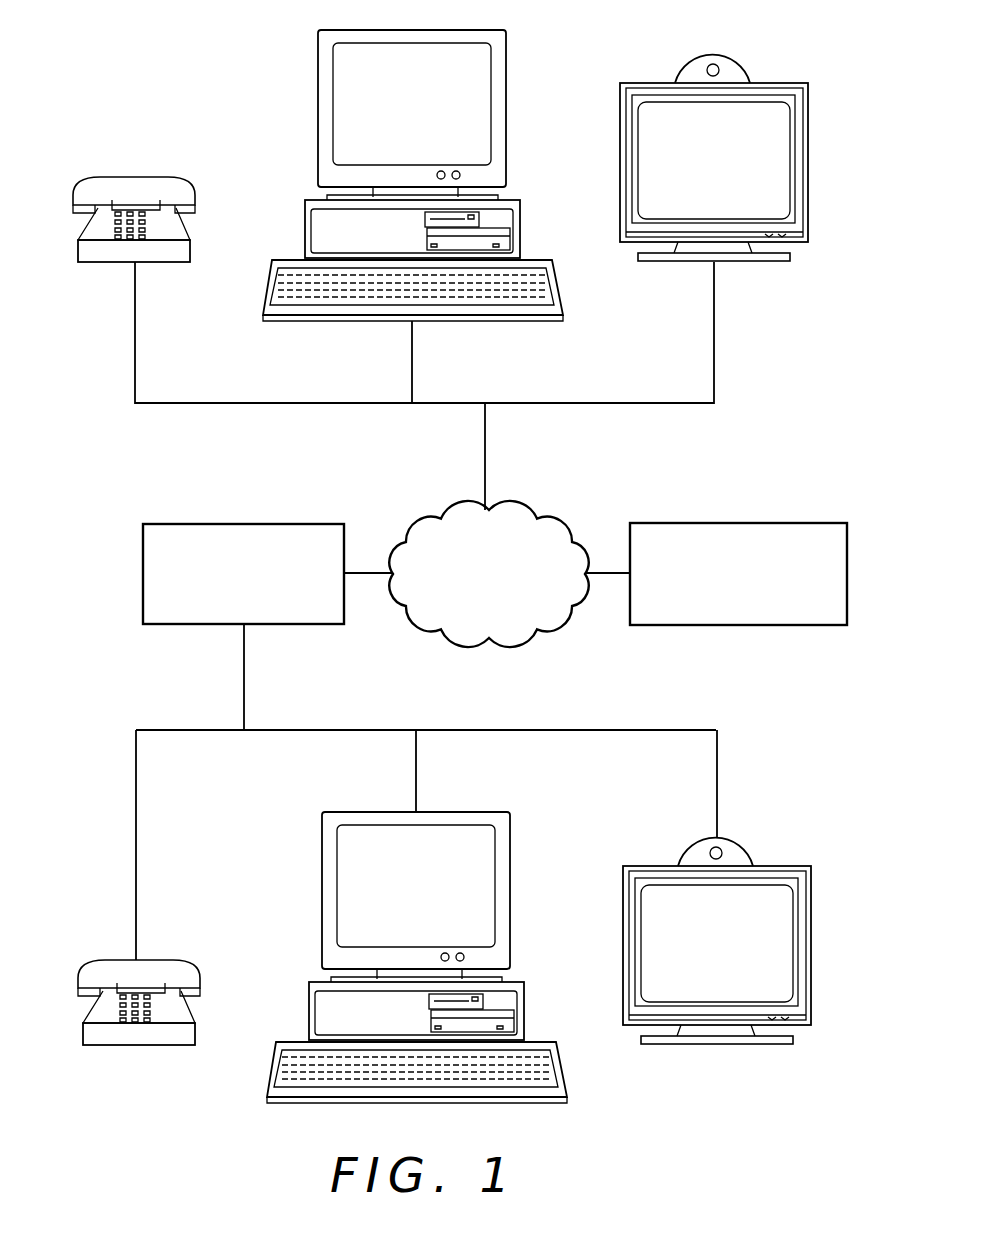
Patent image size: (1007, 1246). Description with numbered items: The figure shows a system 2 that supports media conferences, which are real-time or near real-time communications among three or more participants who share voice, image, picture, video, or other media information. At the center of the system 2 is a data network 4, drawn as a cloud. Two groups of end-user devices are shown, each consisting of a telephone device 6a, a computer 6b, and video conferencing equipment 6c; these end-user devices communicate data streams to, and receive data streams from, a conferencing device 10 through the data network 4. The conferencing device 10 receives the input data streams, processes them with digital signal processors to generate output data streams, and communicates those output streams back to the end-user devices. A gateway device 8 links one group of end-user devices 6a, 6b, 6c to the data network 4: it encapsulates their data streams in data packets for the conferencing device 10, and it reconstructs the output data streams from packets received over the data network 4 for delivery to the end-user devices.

The system 2 is at (723, 1096).
The data network 4 is at (410, 528).
The telephone device 6a is at (108, 180).
The computer 6b is at (318, 68).
The video conferencing equipment 6c is at (738, 67).
The gateway device 8 is at (143, 574).
The conferencing device 10 is at (847, 573).